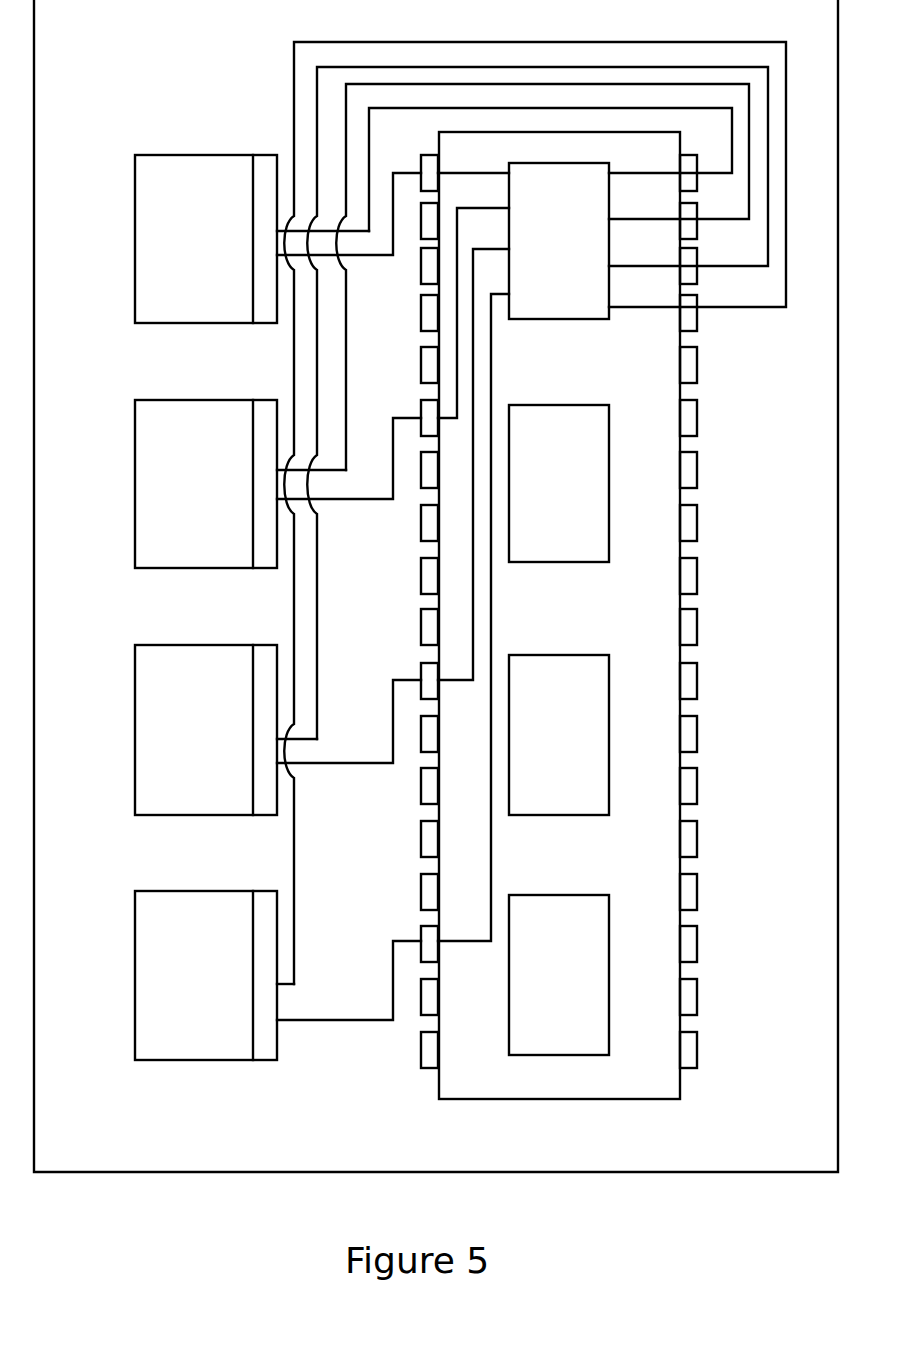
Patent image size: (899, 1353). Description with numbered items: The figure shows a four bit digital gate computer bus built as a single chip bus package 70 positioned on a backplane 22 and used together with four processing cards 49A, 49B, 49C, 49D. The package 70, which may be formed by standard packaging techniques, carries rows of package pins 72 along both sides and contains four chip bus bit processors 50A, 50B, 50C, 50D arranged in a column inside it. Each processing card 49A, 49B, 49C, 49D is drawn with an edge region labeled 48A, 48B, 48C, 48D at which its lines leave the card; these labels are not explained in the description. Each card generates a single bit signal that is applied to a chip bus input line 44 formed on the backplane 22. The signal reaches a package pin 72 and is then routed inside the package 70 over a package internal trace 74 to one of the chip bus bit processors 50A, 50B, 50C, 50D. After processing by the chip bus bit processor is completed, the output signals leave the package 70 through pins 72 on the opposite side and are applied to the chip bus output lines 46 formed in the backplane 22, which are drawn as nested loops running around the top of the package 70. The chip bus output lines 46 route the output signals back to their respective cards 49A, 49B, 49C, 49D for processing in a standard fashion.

The backplane 22 is at (98, 34).
The chip bus input line 44 is at (372, 203).
The chip bus output lines 46 is at (712, 72).
The card connector 48A is at (263, 323).
The card connector 48B is at (263, 568).
The card connector 48C is at (263, 815).
The card connector 48D is at (263, 1060).
The processing card 49A is at (135, 213).
The processing card 49B is at (135, 458).
The processing card 49C is at (135, 703).
The processing card 49D is at (135, 952).
The chip bus bit processor 50A is at (559, 241).
The chip bus bit processor 50B is at (559, 483).
The chip bus bit processor 50C is at (559, 735).
The chip bus bit processor 50D is at (559, 975).
The chip bus package 70 is at (643, 423).
The package pins 72 is at (697, 482).
The package internal trace 74 is at (467, 208).